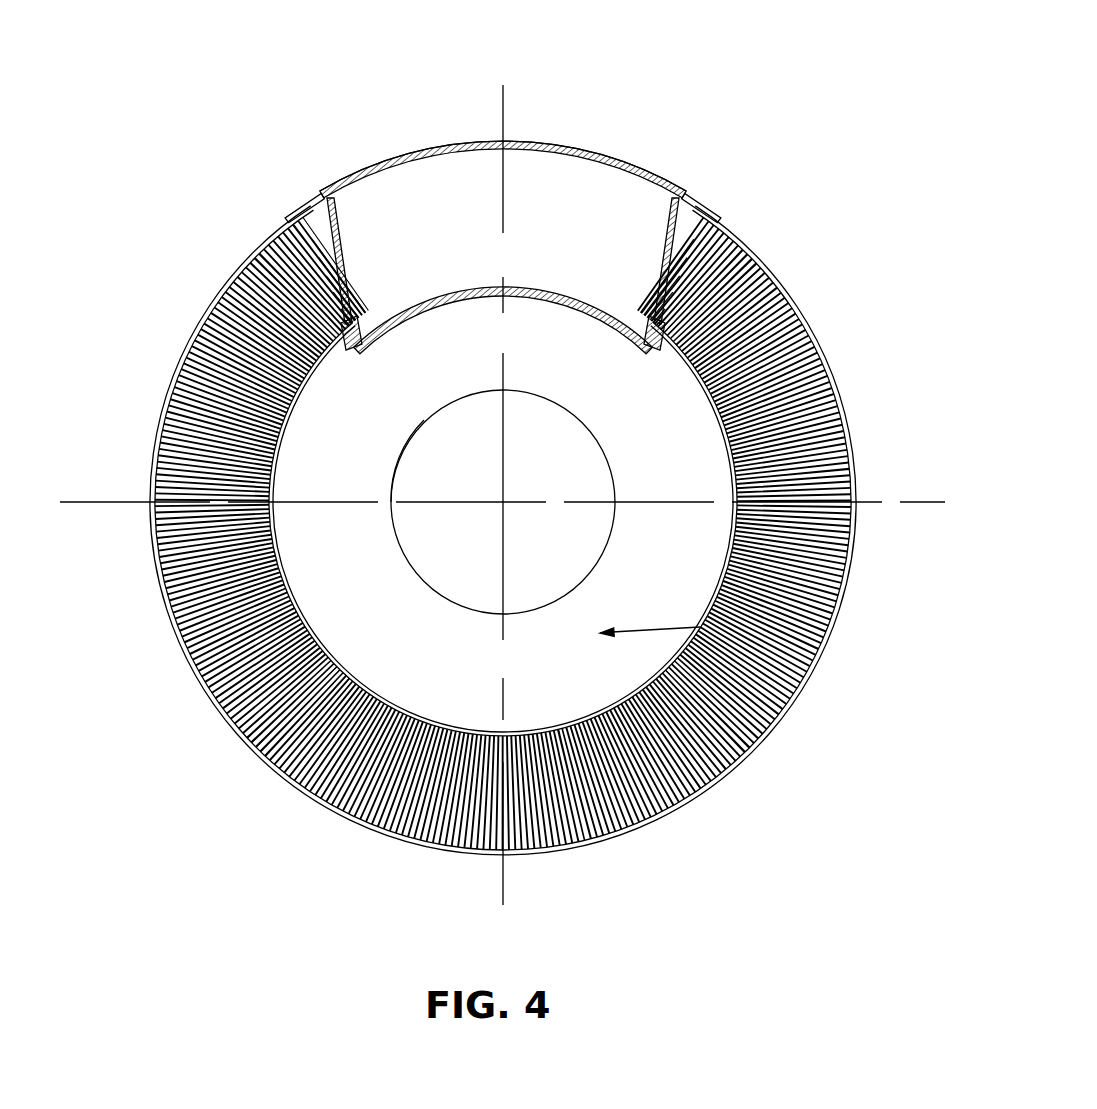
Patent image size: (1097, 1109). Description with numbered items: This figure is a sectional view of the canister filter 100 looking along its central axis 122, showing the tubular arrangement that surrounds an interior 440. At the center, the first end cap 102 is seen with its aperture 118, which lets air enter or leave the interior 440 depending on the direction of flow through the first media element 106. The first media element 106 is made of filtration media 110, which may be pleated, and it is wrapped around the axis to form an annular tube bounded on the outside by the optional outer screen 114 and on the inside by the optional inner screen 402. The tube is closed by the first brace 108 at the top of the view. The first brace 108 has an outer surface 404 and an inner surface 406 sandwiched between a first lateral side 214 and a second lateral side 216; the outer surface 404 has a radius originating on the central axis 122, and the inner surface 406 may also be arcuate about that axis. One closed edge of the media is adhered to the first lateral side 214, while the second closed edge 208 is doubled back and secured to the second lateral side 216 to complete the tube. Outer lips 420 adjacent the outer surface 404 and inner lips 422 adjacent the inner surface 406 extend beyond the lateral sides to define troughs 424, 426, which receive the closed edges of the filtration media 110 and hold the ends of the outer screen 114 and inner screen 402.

The canister filter 100 is at (716, 66).
The first end cap 102 is at (350, 437).
The first media element 106 is at (200, 680).
The first brace 108 is at (438, 128).
The filtration media 110 is at (250, 280).
The outer screen 114 is at (170, 618).
The aperture 118 is at (393, 520).
The central axis 122 is at (505, 502).
The second closed edge 208 is at (622, 185).
The first lateral side 214 is at (346, 258).
The second lateral side 216 is at (665, 272).
The inner screen 402 is at (290, 548).
The outer surface 404 is at (536, 140).
The inner surface 406 is at (534, 298).
The outer lips 420 is at (312, 204).
The inner lips 422 is at (352, 340).
The first trough 424 is at (314, 273).
The second trough 426 is at (695, 271).
The interior 440 is at (810, 673).